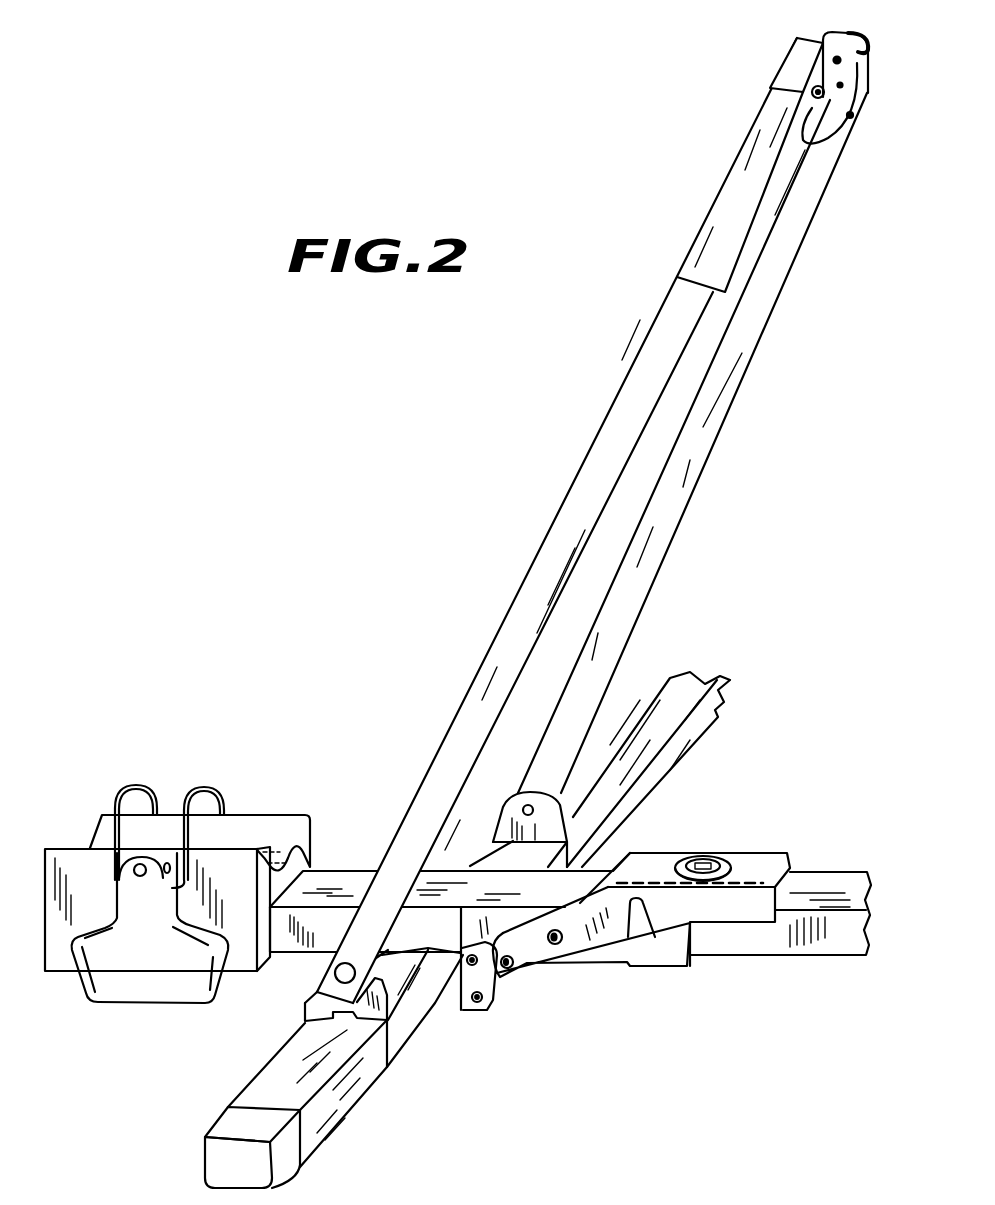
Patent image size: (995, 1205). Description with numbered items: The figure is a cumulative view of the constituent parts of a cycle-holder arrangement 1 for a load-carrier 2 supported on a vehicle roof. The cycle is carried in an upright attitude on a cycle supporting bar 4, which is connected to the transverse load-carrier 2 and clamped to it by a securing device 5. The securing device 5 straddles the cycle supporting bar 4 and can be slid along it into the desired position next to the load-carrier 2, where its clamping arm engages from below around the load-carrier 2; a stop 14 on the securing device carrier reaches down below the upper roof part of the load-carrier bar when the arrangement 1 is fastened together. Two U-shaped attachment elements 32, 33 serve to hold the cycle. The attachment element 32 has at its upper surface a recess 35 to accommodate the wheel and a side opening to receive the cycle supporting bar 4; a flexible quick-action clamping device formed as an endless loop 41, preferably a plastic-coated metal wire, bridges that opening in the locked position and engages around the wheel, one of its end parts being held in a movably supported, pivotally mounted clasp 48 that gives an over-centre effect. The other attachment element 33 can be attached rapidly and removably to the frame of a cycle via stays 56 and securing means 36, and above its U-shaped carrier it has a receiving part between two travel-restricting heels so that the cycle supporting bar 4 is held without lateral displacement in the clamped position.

The arrangement 1 is at (203, 892).
The load-carrier 2 is at (330, 1123).
The cycle supporting bar 4 is at (823, 888).
The securing device 5 is at (678, 967).
The stop 14 is at (437, 1003).
The attachment element 32 is at (260, 808).
The attachment element 33 is at (315, 1003).
The recess 35 is at (282, 830).
The securing means 36 is at (793, 62).
The quick-action clamping device 41 is at (130, 787).
The clasp 48 is at (122, 995).
The stays 56 is at (622, 428).